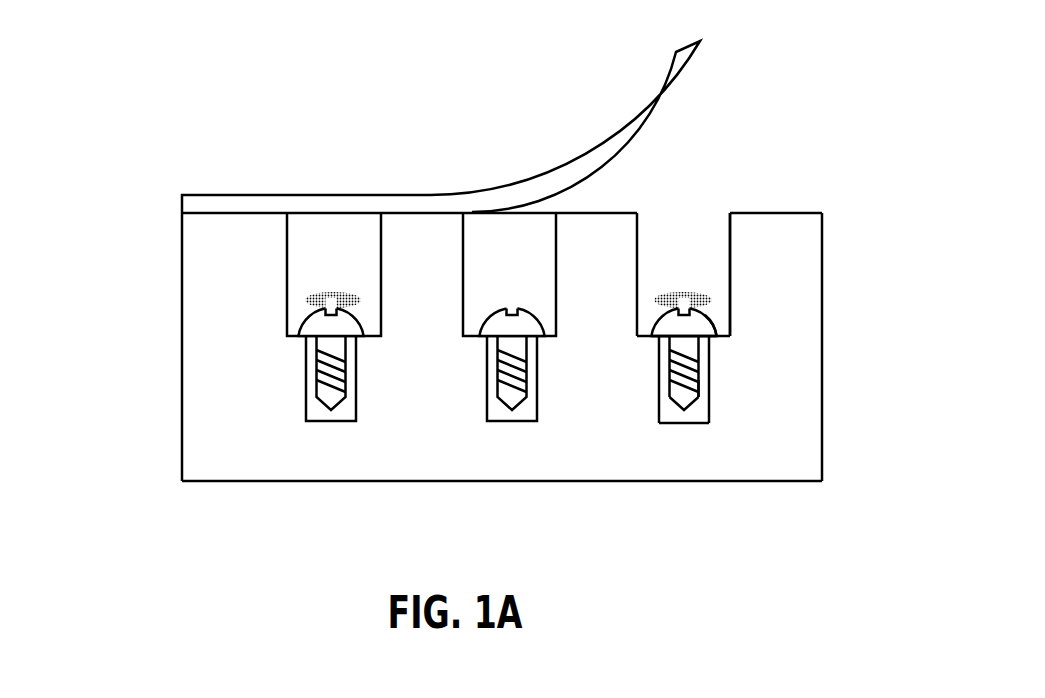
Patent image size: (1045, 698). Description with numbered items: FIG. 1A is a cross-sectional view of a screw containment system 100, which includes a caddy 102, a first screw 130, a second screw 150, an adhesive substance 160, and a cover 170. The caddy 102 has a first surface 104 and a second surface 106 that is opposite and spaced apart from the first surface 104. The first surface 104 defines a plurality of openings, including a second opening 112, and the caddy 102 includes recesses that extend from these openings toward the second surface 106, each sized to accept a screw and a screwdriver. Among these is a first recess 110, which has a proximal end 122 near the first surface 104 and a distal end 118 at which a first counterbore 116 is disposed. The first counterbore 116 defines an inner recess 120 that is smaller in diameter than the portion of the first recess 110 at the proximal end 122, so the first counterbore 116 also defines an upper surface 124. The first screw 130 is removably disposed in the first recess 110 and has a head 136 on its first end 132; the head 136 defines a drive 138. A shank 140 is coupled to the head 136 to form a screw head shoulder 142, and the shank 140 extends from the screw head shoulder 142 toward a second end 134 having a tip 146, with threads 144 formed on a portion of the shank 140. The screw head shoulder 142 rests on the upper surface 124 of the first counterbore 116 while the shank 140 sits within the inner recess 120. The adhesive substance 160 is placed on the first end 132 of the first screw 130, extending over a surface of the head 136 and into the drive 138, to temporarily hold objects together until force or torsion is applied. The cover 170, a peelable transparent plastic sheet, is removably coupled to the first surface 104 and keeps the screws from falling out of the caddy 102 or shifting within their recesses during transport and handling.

The screw containment system 100 is at (100, 71).
The caddy 102 is at (182, 273).
The first surface 104 is at (771, 212).
The second surface 106 is at (212, 481).
The first recess 110 is at (713, 212).
The second opening 112 is at (511, 228).
The first counterbore 116 is at (668, 345).
The distal end 118 is at (687, 427).
The inner recess 120 is at (670, 408).
The proximal end 122 is at (732, 213).
The upper surface 124 is at (643, 336).
The first screw 130 is at (668, 343).
The first end 132 is at (726, 306).
The second end 134 is at (708, 435).
The head 136 is at (716, 319).
The drive 138 is at (684, 310).
The shank 140 is at (698, 352).
The screw head shoulder 142 is at (708, 337).
The threads 144 is at (698, 376).
The tip 146 is at (708, 414).
The second screw 150 is at (492, 312).
The adhesive substance 160 is at (701, 291).
The cover 170 is at (657, 97).